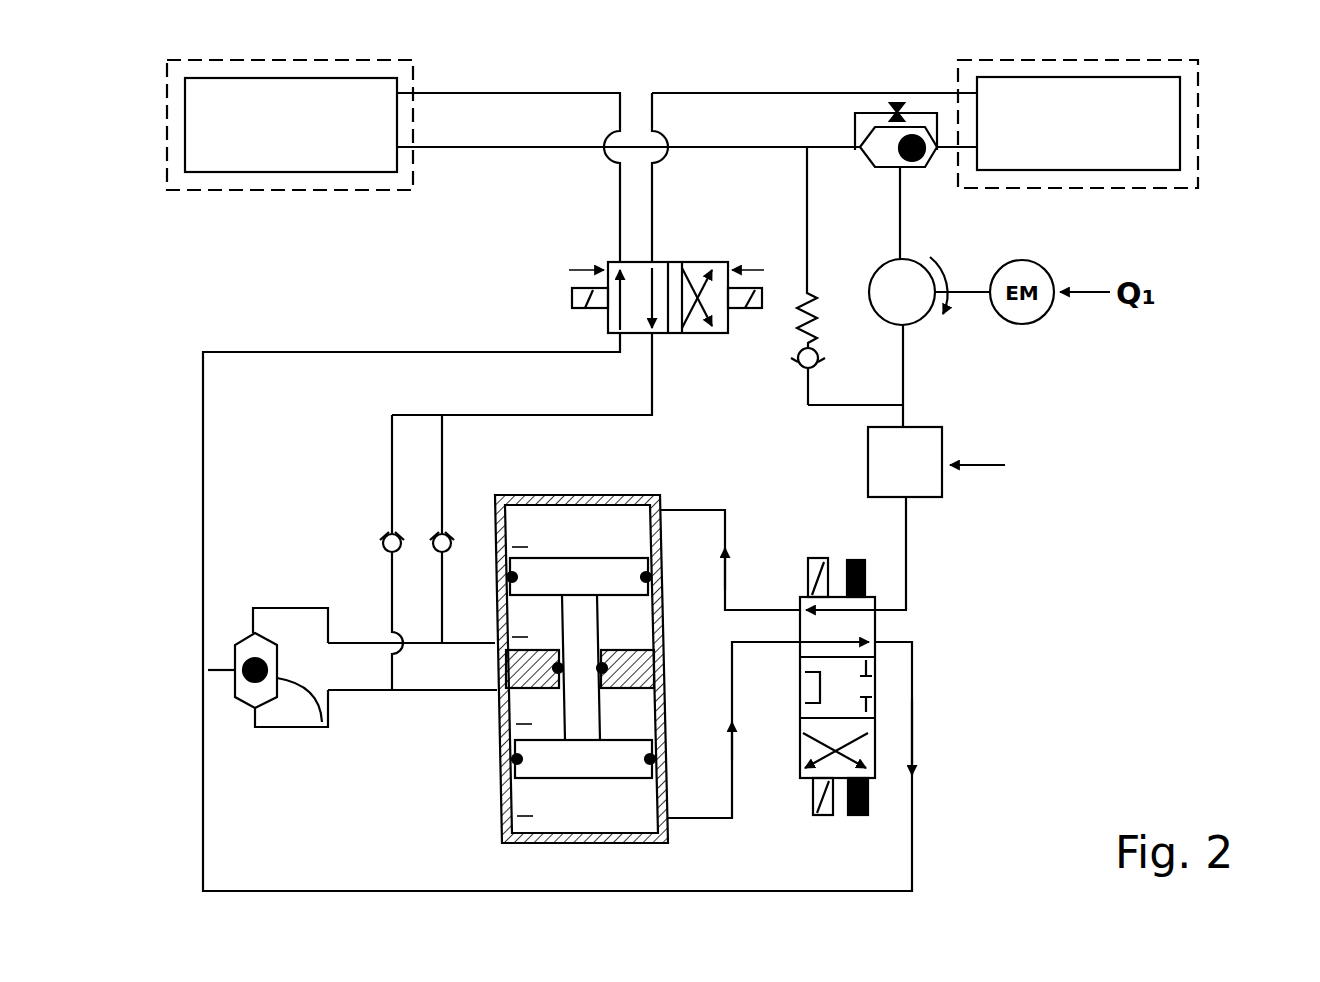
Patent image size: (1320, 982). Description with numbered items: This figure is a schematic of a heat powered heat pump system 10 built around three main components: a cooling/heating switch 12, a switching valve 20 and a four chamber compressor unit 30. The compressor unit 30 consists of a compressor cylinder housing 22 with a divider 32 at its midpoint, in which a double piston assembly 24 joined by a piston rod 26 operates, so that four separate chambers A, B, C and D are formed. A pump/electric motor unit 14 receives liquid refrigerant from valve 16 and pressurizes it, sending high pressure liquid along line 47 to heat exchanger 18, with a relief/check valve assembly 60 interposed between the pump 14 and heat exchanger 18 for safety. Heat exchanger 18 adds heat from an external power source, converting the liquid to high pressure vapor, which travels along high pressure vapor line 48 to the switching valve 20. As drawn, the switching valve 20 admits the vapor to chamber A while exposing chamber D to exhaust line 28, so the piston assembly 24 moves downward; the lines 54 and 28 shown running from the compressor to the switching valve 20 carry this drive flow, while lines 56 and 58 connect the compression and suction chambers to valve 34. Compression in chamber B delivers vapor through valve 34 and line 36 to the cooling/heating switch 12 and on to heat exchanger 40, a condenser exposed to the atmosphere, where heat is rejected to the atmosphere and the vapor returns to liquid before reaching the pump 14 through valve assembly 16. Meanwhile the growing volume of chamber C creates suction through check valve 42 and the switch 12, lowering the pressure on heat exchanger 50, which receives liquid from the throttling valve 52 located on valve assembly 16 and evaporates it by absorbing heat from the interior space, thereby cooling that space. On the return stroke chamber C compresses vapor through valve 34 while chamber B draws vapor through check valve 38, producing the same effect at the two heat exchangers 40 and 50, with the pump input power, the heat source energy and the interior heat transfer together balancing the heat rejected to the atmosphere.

The heat powered heat pump system 10 is at (1213, 257).
The cooling/heating switch 12 is at (603, 253).
The pump/electric motor unit 14 is at (908, 328).
The valve assembly 16 is at (912, 176).
The heat exchanger 18 is at (945, 434).
The switching valve 20 is at (899, 627).
The compressor cylinder housing 22 is at (586, 495).
The double piston assembly 24 is at (577, 790).
The piston rod 26 is at (578, 625).
The exhaust line 28 is at (690, 822).
The four chamber compressor unit 30 is at (545, 489).
The divider 32 is at (494, 680).
The valve 34 is at (323, 728).
The line 36 is at (203, 528).
The check valve 38 is at (440, 533).
The heat exchanger 40 is at (232, 202).
The check valve 42 is at (386, 546).
The line 47 is at (906, 413).
The high pressure vapor line 48 is at (910, 536).
The heat exchanger 50 is at (1123, 199).
The throttling valve 52 is at (890, 110).
The upper cylinder line 54 is at (728, 529).
The lower connecting line 56 is at (427, 695).
The upper connecting line 58 is at (472, 643).
The relief/check valve assembly 60 is at (805, 330).